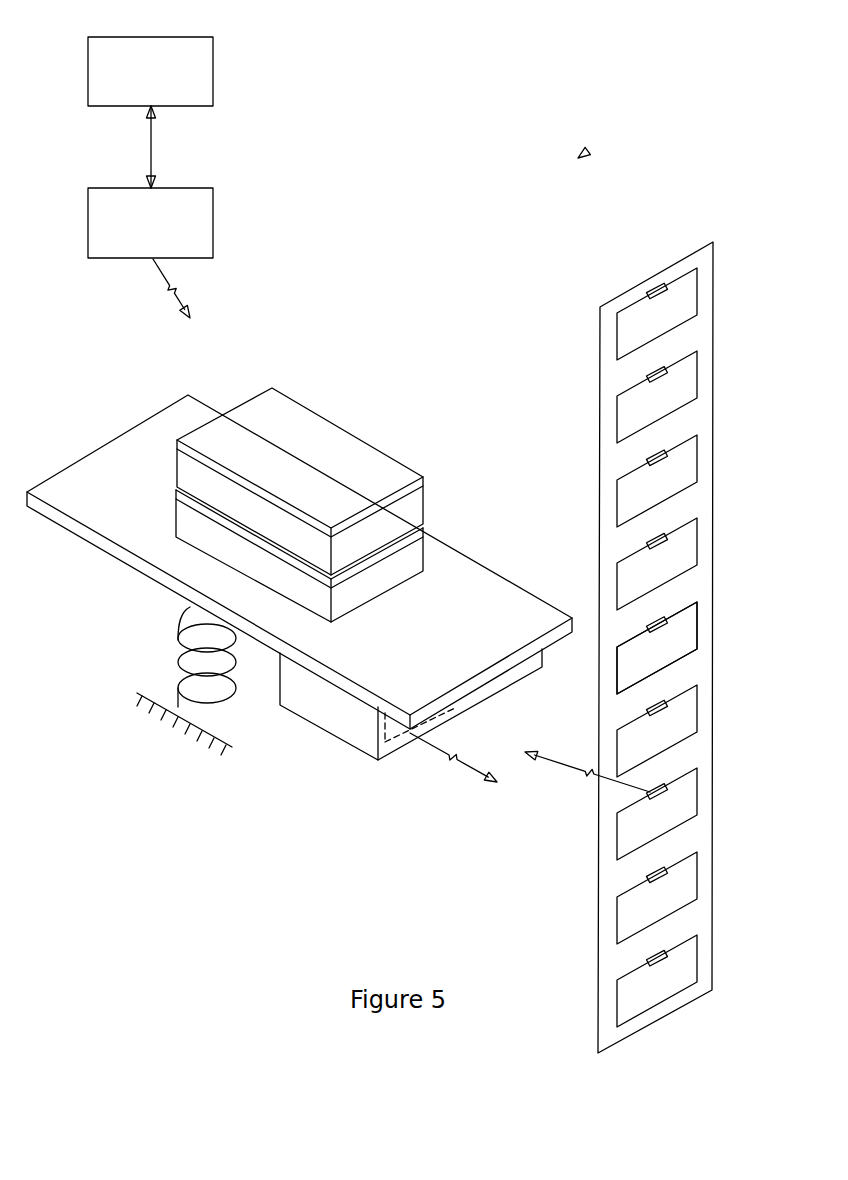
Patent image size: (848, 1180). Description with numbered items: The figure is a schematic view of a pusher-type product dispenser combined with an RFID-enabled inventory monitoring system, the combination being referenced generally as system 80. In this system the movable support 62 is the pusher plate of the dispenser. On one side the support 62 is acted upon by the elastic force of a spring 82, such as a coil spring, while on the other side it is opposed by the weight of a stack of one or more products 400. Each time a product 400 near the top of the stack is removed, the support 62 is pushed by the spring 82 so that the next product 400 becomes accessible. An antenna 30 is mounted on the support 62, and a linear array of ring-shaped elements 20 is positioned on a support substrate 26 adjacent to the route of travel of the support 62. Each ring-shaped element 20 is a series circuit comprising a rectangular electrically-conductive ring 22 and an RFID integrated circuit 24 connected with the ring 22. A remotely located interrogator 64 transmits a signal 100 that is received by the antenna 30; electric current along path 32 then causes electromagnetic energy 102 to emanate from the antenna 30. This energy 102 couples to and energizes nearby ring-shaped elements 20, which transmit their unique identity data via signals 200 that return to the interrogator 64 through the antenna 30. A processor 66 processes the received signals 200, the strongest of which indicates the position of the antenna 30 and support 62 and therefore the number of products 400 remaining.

The processor 66 is at (88, 53).
The interrogator 64 is at (88, 217).
The signal 100 is at (166, 278).
The movable support 62 is at (87, 533).
The products 400 is at (382, 470).
The spring 82 is at (177, 632).
The antenna 30 is at (338, 717).
The path 32 is at (380, 757).
The electromagnetic energy 102 is at (466, 770).
The signal 200 is at (548, 760).
The system 80 is at (588, 150).
The support substrate 26 is at (715, 276).
The ring-shaped element 20 is at (731, 352).
The electrically-conductive ring 22 is at (700, 627).
The RFID integrated circuit 24 is at (664, 612).